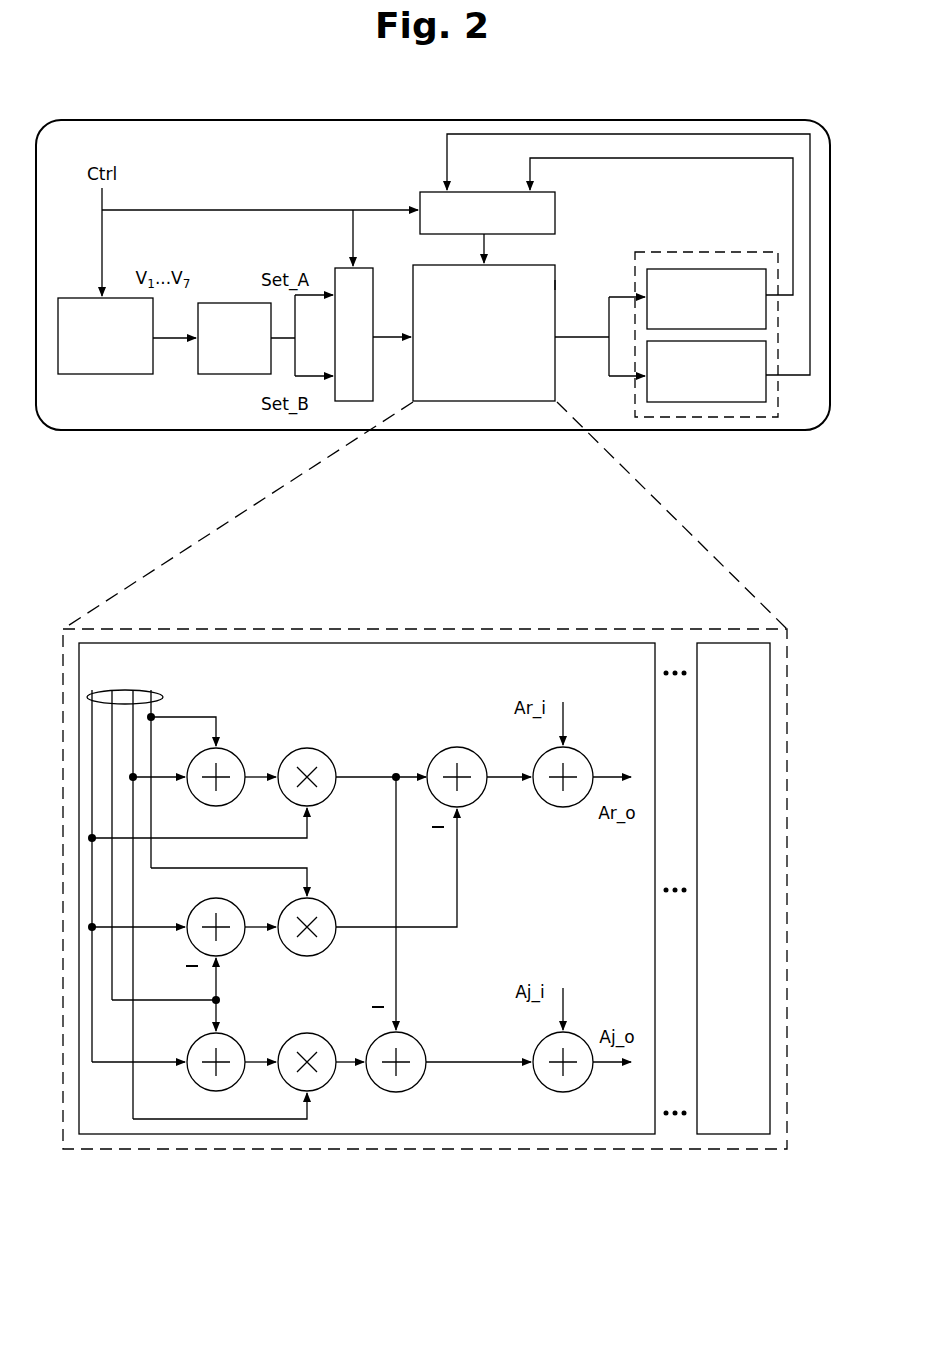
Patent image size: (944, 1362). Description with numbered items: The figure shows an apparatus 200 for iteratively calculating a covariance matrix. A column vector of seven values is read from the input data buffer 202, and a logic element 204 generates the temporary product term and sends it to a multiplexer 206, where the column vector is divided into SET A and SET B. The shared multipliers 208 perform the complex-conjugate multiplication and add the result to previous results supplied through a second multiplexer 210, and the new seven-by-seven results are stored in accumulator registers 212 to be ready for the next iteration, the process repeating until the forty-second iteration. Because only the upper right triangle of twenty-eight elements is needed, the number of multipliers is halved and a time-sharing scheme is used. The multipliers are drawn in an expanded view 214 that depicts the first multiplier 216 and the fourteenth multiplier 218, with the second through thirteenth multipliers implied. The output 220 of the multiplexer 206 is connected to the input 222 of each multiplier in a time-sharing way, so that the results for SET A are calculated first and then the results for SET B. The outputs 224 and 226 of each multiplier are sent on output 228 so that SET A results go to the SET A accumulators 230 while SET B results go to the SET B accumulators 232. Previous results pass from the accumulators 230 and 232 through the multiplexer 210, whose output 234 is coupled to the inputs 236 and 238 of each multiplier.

The processing device 200 is at (537, 118).
The input data buffer 202 is at (110, 374).
The logic element 204 is at (232, 374).
The multiplexer 206 is at (348, 401).
The shared multipliers 208 is at (556, 283).
The multiplexer 210 is at (428, 192).
The accumulator registers 212 is at (735, 417).
The expanded view of multipliers 214 is at (787, 813).
The multiplier #1 216 is at (540, 1134).
The multiplier #14 218 is at (722, 1134).
The output of multiplexer 206 220 is at (396, 365).
The input of multipliers 222 is at (163, 697).
The multiplier output 224 is at (608, 776).
The multiplier output 226 is at (610, 1064).
The output 228 is at (583, 337).
The SET A accumulators 230 is at (766, 315).
The SET B accumulators 232 is at (766, 390).
The output of multiplexer 210 234 is at (490, 247).
The multiplier input 236 is at (572, 715).
The multiplier input 238 is at (565, 1003).